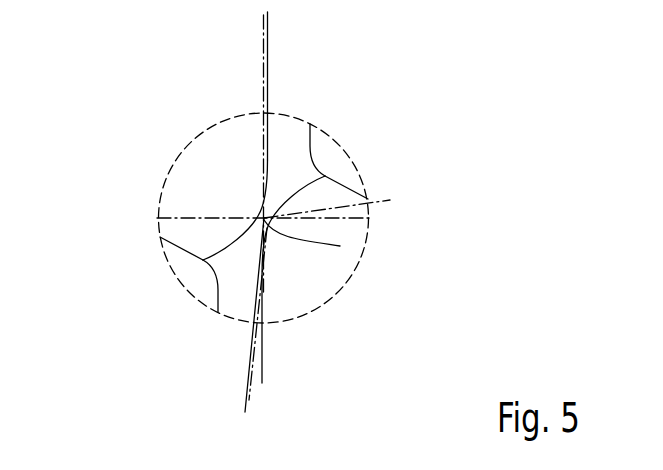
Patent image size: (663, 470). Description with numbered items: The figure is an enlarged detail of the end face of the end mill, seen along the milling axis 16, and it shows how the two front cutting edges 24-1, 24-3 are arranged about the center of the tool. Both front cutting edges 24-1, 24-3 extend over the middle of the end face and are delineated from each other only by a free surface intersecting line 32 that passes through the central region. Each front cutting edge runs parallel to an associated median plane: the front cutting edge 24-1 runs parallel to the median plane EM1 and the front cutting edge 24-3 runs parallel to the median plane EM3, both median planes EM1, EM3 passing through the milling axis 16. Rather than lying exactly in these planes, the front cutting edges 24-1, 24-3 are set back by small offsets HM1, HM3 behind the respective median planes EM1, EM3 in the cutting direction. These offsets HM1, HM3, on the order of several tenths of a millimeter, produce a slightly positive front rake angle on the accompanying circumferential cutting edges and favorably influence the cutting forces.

The milling axis 16 is at (365, 203).
The front cutting edge 24-1 is at (263, 158).
The front cutting edge 24-3 is at (258, 295).
The free surface intersecting line 32 is at (340, 246).
The median plane EM1 is at (266, 50).
The median plane EM3 is at (249, 400).
The offset HM1 is at (225, 80).
The offset HM3 is at (276, 395).